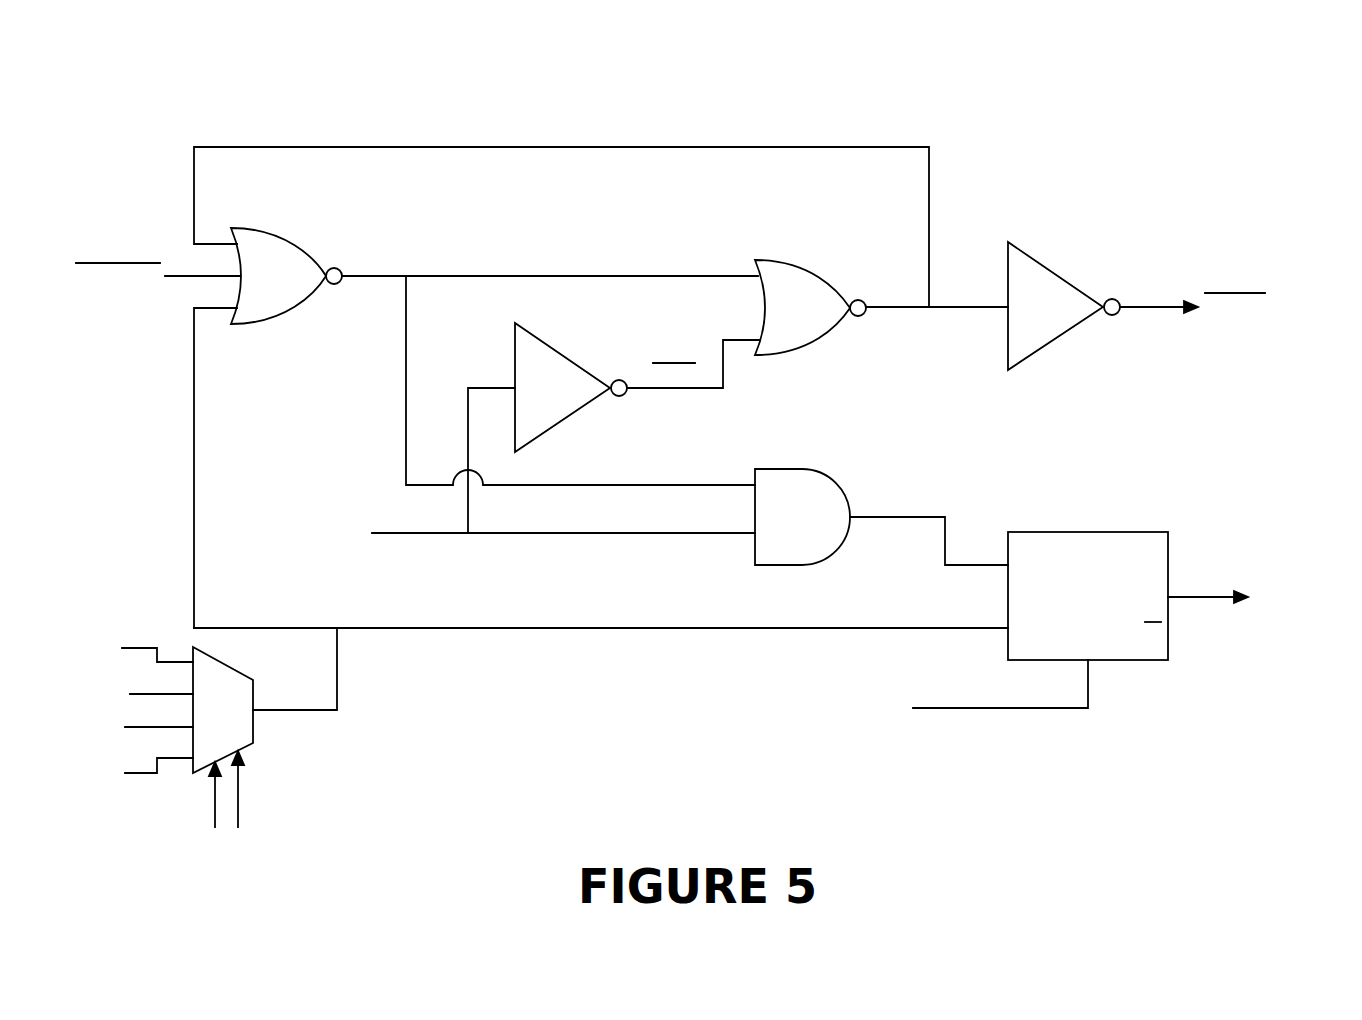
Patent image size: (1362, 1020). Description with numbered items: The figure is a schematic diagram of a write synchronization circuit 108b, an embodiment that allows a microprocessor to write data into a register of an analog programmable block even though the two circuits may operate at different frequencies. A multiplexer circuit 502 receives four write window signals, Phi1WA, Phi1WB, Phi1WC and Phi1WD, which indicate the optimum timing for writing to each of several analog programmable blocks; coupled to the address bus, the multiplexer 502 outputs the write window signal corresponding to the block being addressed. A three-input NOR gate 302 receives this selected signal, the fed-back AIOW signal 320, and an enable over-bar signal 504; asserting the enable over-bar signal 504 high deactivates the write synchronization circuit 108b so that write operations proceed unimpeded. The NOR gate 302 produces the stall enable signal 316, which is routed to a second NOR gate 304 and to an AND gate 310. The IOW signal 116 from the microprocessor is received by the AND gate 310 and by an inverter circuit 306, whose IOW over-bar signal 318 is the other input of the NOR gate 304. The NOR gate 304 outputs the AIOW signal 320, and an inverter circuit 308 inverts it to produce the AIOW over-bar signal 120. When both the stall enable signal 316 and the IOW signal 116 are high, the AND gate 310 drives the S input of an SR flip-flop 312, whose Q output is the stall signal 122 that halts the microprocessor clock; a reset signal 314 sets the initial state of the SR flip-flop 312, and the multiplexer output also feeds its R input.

The write synchronization circuit 108b is at (123, 85).
The NOR gate 302 is at (295, 289).
The NOR gate 304 is at (820, 318).
The inverter circuit 306 is at (565, 400).
The inverter circuit 308 is at (1058, 318).
The AND gate 310 is at (818, 528).
The SR flip-flop 312 is at (1107, 645).
The reset signal 314 is at (965, 703).
The stall enable (StallEn) signal 316 is at (375, 272).
The IOW over-bar signal 318 is at (693, 376).
The AIOW signal 320 is at (561, 215).
The multiplexer (Mux) circuit 502 is at (238, 723).
The enable over-bar signal 504 is at (158, 283).
The IOW signal 116 is at (541, 477).
The AIOW over-bar signal 120 is at (1192, 317).
The stall signal 122 is at (1244, 609).